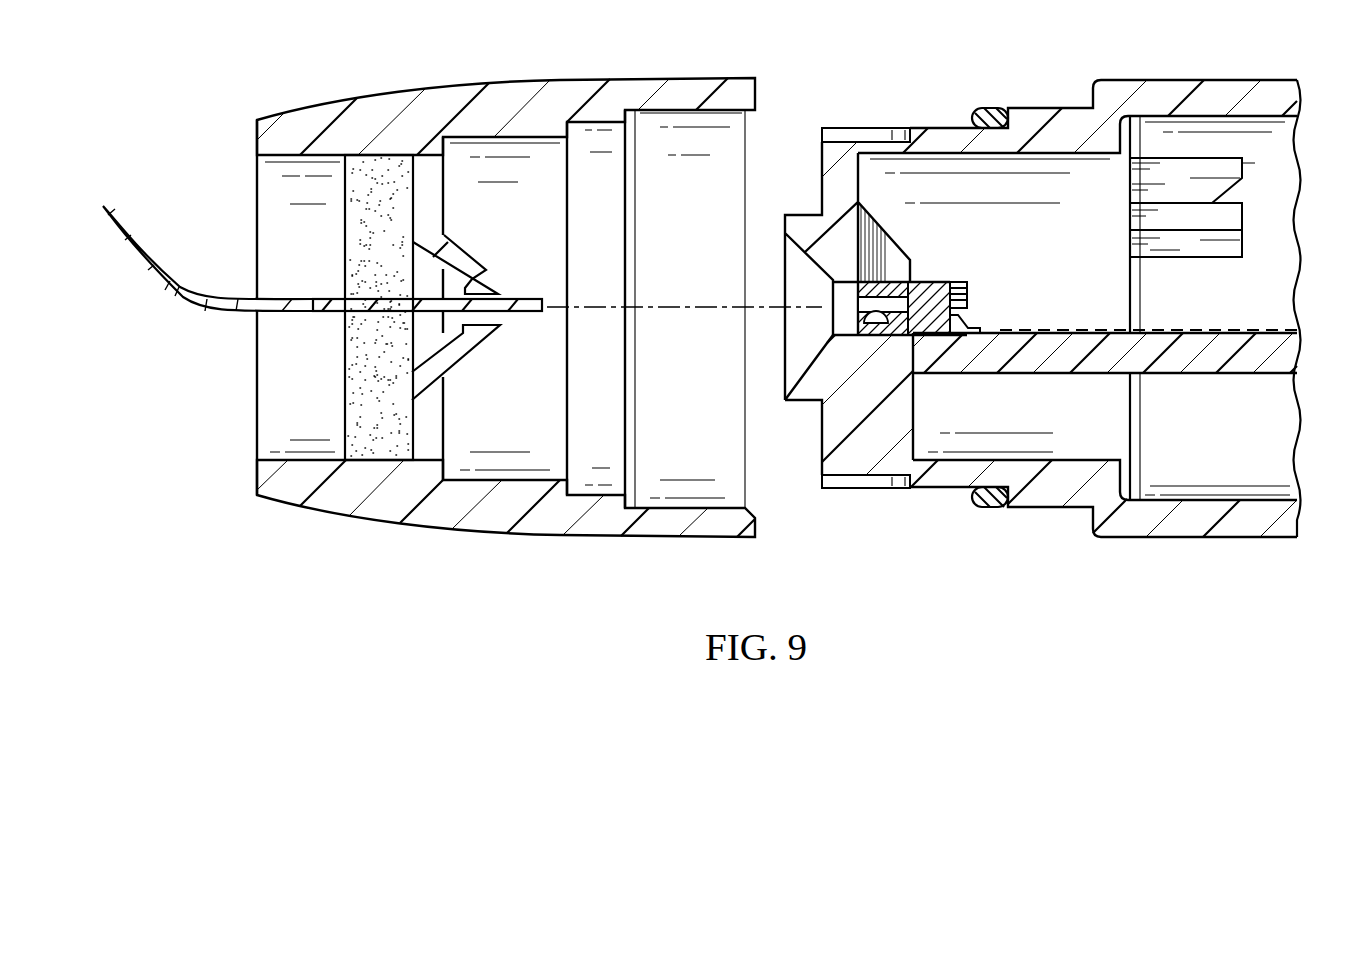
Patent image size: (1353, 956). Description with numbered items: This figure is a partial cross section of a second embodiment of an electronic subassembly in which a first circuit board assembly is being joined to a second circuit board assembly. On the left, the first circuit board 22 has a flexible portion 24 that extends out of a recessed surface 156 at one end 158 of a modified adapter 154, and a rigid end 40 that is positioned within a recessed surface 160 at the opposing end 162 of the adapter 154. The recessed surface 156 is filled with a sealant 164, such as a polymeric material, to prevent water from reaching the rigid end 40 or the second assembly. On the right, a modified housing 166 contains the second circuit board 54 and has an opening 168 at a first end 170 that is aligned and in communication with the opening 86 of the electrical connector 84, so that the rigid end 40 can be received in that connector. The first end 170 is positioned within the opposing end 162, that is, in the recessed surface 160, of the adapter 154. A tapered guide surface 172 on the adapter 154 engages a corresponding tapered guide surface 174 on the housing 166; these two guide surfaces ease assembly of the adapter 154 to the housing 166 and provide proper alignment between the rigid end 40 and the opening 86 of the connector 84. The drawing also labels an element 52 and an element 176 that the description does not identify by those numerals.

The first circuit board 22 is at (221, 285).
The flexible portion 24 is at (186, 301).
The rigid end 40 is at (530, 300).
The shaft 52 is at (1025, 320).
The second circuit board 54 is at (1055, 393).
The electrical connector 84 is at (928, 280).
The opening 86 is at (878, 334).
The adapter 154 is at (528, 78).
The recessed surface 156 is at (270, 420).
The end 158 is at (278, 517).
The recessed surface 160 is at (742, 123).
The opposing end 162 is at (736, 550).
The sealant 164 is at (398, 238).
The housing 166 is at (1186, 82).
The opening 168 is at (800, 273).
The first end 170 is at (868, 114).
The tapered guide surface 172 is at (479, 357).
The tapered guide surface 174 is at (800, 350).
The O-ring 176 is at (984, 508).